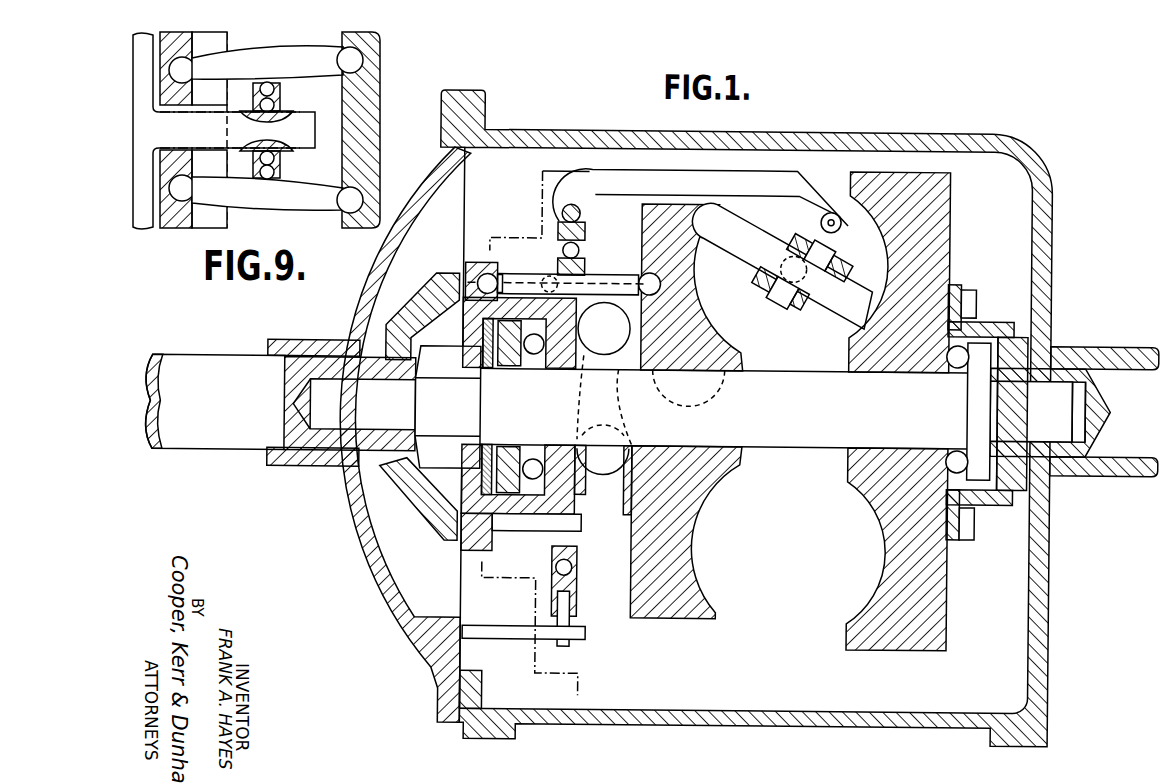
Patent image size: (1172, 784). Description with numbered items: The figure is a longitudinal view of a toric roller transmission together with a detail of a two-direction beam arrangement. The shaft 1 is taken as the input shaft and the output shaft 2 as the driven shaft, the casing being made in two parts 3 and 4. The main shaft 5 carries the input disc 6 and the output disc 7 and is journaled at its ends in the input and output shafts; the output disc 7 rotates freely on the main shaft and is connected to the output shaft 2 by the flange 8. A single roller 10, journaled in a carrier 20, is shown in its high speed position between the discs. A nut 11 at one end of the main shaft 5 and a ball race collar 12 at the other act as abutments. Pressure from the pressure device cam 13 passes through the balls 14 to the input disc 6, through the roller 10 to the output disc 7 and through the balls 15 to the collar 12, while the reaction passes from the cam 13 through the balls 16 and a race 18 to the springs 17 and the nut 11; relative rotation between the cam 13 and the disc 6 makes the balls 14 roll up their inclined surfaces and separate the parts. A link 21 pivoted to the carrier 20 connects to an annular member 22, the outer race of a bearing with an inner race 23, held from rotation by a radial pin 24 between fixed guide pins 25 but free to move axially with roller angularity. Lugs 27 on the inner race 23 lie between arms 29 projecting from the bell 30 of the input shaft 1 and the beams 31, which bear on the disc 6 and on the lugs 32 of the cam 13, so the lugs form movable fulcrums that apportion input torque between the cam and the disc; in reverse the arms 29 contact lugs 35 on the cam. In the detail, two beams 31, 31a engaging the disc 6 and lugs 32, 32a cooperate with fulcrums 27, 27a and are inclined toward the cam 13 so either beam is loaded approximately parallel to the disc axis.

In FIG. 1, the input shaft 1 is at (236, 454).
In FIG. 1, the output shaft 2 is at (548, 163).
In FIG. 1, the casing part 3 is at (405, 214).
In FIG. 1, the casing part 4 is at (910, 140).
In FIG. 1, the main shaft 5 is at (790, 444).
In FIG. 1, the input disc 6 is at (642, 214).
In FIG. 9, the input disc 6 is at (381, 42).
In FIG. 1, the output disc 7 is at (946, 242).
In FIG. 1, the flange 8 is at (988, 503).
In FIG. 1, the roller 10 is at (836, 306).
In FIG. 1, the nut 11 is at (452, 460).
In FIG. 1, the ball race collar 12 is at (978, 355).
In FIG. 1, the pressure device cam 13 is at (562, 370).
In FIG. 9, the pressure device cam 13 is at (228, 45).
In FIG. 1, the balls 14 is at (605, 494).
In FIG. 1, the balls 15 is at (955, 452).
In FIG. 1, the balls 16 is at (533, 356).
In FIG. 1, the springs 17 is at (483, 334).
In FIG. 1, the race 18 is at (510, 366).
In FIG. 1, the carrier 20 is at (783, 240).
In FIG. 1, the link 21 is at (688, 182).
In FIG. 1, the annular member 22 is at (585, 243).
In FIG. 1, the inner race 23 is at (585, 265).
In FIG. 1, the radial pin 24 is at (572, 620).
In FIG. 1, the fixed guide pins 25 is at (580, 639).
In FIG. 1, the lugs 27 is at (548, 286).
In FIG. 9, the lugs 27 is at (282, 170).
In FIG. 9, the movable fulcrum lug 27a is at (282, 97).
In FIG. 1, the arms 29 is at (518, 272).
In FIG. 9, the arms 29 is at (310, 136).
In FIG. 1, the bell 30 is at (437, 275).
In FIG. 9, the bell 30 is at (222, 147).
In FIG. 1, the beams 31 is at (501, 278).
In FIG. 9, the beams 31 is at (283, 205).
In FIG. 9, the beam 31a is at (302, 58).
In FIG. 1, the lugs 32 is at (475, 264).
In FIG. 9, the lugs 32 is at (192, 212).
In FIG. 9, the lug 32a is at (209, 68).
In FIG. 1, the lugs 35 is at (478, 553).